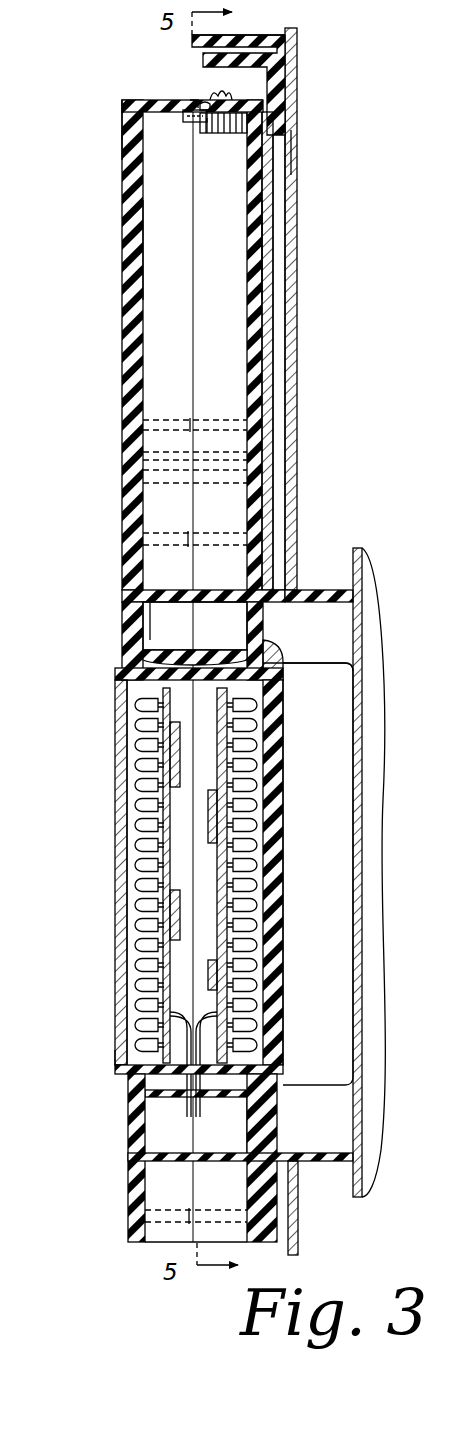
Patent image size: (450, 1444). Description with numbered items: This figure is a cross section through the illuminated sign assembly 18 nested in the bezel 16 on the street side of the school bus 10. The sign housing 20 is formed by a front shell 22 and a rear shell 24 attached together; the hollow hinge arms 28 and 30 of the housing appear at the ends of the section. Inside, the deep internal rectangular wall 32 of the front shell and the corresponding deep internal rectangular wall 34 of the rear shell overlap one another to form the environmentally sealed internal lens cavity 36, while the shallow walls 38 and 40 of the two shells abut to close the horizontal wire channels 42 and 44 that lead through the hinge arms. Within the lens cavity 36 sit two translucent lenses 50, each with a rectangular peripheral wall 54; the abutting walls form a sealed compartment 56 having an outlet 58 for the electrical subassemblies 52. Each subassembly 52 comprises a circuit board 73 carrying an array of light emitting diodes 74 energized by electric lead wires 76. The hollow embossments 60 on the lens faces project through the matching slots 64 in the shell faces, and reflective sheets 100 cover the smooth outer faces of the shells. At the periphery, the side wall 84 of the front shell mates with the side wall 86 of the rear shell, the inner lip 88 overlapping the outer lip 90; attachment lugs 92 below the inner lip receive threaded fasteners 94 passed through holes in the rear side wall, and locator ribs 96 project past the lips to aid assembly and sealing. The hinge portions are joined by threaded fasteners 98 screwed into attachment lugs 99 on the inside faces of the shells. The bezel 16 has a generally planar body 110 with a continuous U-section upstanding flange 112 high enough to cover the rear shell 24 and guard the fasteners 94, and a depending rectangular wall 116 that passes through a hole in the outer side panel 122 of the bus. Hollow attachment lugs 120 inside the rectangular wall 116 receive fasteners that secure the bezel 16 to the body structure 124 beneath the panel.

The school bus 10 is at (300, 118).
The bezel 16 is at (286, 43).
The illuminated sign assembly 18 is at (118, 106).
The housing 20 is at (118, 136).
The front shell 22 is at (133, 200).
The rear shell 24 is at (268, 192).
The hinge arm 28 is at (150, 420).
The hinge arm 30 is at (128, 1246).
The deep internal rectangular wall 32 is at (170, 640).
The deep internal rectangular wall 34 is at (240, 655).
The internal lens cavity 36 is at (150, 670).
The shallow walls 38 is at (165, 590).
The shallow walls 40 is at (214, 592).
The horizontal wire channel 42 is at (150, 604).
The horizontal wire channel 44 is at (160, 1160).
The translucent lens 50 is at (290, 734).
The electrical subassembly 52 is at (163, 892).
The peripheral wall 54 is at (135, 684).
The sealed compartment 56 is at (170, 832).
The outlet 58 is at (120, 1070).
The hollow embossments 60 is at (115, 775).
The slots 64 is at (120, 1060).
The circuit board 73 is at (235, 900).
The light emitting diodes 74 is at (158, 866).
The electric lead wires 76 is at (188, 1112).
The peripheral side wall 84 is at (185, 99).
The peripheral side wall 86 is at (196, 102).
The inner lip 88 is at (190, 122).
The outer lip 90 is at (203, 108).
The attachment lug 92 is at (222, 134).
The threaded fastener 94 is at (228, 96).
The locator rib 96 is at (207, 122).
The threaded fastener 98 is at (250, 466).
The attachment lug 99 is at (150, 446).
The reflective sheet 100 is at (128, 245).
The planar body 110 is at (270, 325).
The upstanding flange 112 is at (268, 36).
The depending rectangular wall 116 is at (308, 590).
The hollow attachment lug 120 is at (380, 742).
The outer side panel 122 is at (292, 150).
The body structure 124 is at (360, 600).